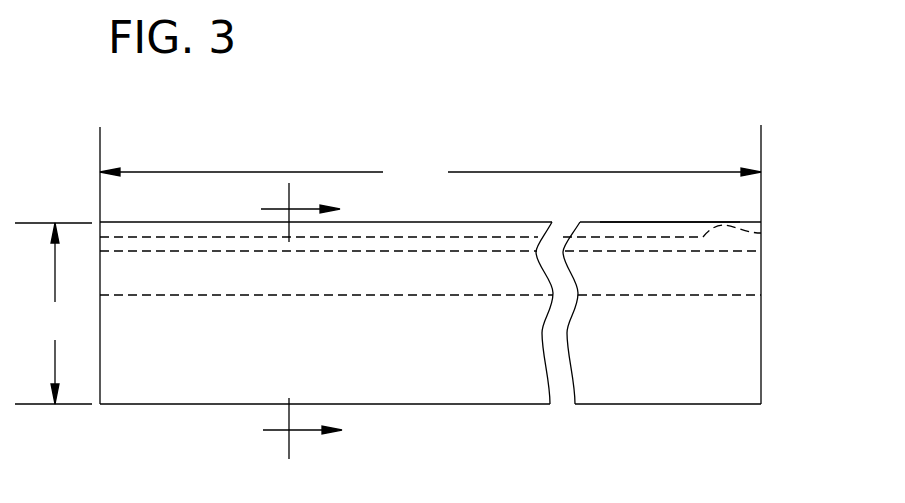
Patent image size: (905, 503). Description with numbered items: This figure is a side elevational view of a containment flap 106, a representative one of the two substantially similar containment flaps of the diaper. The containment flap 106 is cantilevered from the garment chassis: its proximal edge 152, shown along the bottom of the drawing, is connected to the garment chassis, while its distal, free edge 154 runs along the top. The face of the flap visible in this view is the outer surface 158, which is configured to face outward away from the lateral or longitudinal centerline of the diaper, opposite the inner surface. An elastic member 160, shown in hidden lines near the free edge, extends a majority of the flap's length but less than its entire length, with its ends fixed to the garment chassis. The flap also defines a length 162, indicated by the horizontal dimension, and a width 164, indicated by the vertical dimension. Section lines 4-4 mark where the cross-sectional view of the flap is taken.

The containment flap 106 is at (761, 310).
The proximal edge 152 is at (725, 404).
The distal, free edge 154 is at (667, 221).
The outer surface 158 is at (635, 383).
The elastic member 160 is at (761, 233).
The length 162 is at (430, 173).
The width 164 is at (53, 313).
The section lines 4- 4 is at (301, 319).